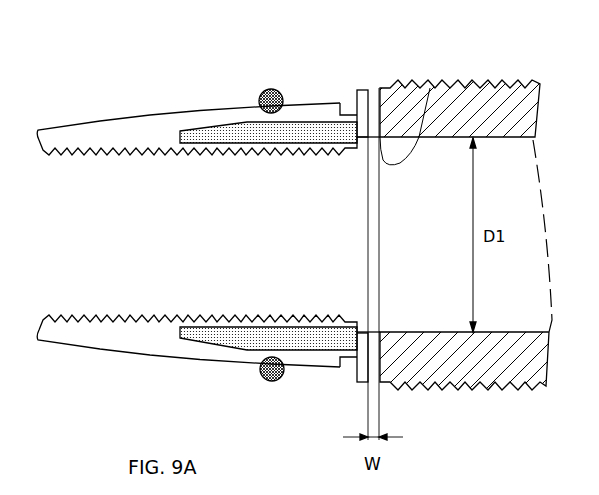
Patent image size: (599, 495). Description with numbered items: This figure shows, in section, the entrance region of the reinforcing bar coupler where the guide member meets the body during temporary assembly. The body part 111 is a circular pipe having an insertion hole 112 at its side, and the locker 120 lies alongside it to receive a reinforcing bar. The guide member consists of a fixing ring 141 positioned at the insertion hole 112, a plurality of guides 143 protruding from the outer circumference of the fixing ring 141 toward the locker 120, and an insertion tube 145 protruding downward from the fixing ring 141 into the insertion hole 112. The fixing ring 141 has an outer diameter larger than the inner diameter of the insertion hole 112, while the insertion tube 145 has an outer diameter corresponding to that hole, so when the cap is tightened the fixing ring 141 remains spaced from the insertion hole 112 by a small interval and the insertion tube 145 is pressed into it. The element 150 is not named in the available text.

The locker 120 is at (146, 117).
The guide 143 is at (223, 127).
The fixing ring 141 is at (350, 108).
The spacer 150 is at (362, 88).
The insertion tube 145 is at (430, 88).
The body part 111 is at (478, 88).
The insertion hole 112 is at (422, 265).